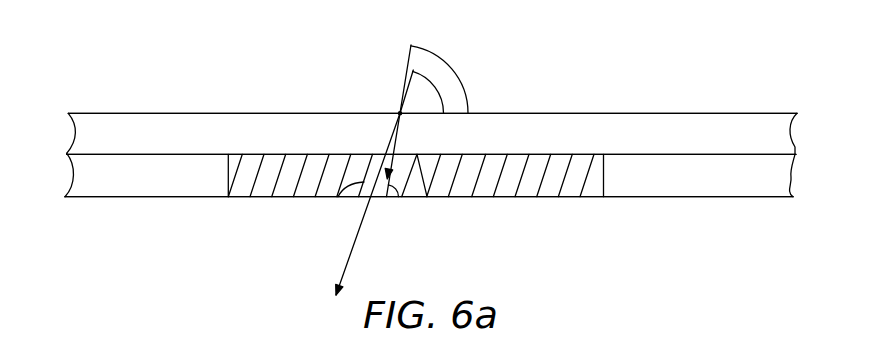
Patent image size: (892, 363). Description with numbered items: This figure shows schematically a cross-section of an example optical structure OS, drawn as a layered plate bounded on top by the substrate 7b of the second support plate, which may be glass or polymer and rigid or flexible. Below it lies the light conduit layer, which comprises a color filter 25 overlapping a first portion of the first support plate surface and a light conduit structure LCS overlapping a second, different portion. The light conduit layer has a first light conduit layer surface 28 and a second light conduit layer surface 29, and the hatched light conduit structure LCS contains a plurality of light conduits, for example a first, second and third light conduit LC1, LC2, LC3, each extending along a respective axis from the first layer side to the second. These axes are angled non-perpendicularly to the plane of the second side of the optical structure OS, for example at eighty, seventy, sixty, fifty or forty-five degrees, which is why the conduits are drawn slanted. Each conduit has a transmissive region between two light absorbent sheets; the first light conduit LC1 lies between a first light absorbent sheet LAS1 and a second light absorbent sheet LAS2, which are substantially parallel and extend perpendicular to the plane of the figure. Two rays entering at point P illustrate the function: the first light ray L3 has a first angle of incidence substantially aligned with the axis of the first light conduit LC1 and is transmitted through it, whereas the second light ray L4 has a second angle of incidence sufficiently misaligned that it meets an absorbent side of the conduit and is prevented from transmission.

The substrate 7b is at (722, 118).
The color filter 25 is at (722, 188).
The optical structure OS is at (583, 126).
The first light conduit layer surface 28 is at (250, 154).
The second light conduit layer surface 29 is at (263, 197).
The light conduit structure LCS is at (572, 198).
The first light conduit LC1 is at (354, 200).
The second light conduit LC2 is at (362, 164).
The third light conduit LC3 is at (333, 164).
The point of incidence P is at (400, 113).
The second light ray L4 is at (395, 140).
The first light ray L3 is at (356, 247).
The second light absorbent sheet LAS2 is at (350, 190).
The first light absorbent sheet LAS1 is at (392, 203).